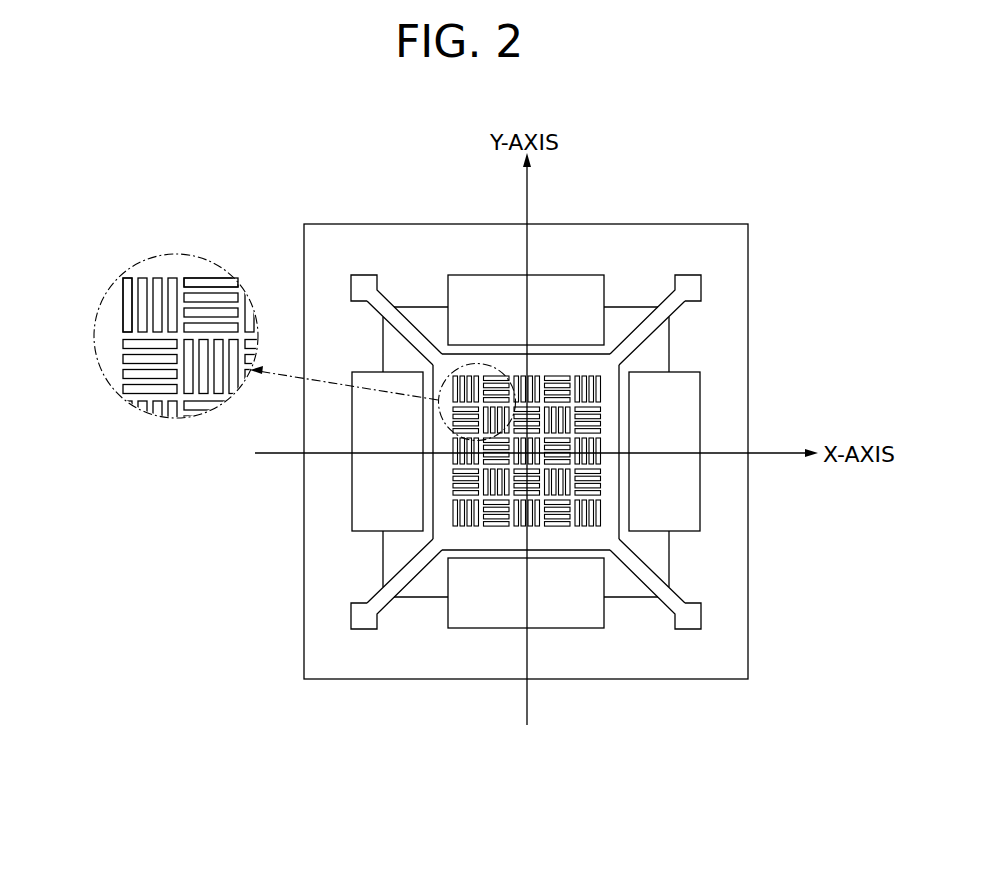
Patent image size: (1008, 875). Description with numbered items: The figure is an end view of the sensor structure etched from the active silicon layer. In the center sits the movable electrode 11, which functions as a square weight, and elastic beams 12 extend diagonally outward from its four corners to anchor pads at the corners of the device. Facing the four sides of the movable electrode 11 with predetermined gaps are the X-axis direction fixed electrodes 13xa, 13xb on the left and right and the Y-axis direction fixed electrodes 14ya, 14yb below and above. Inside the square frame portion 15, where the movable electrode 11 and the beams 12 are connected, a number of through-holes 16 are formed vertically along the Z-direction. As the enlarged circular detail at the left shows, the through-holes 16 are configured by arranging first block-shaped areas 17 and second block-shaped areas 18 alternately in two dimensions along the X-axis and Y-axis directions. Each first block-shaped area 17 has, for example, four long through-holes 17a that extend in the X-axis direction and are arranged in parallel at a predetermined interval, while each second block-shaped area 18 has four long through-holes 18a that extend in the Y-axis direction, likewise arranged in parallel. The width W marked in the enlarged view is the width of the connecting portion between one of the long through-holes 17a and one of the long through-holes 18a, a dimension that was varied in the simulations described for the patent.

The movable electrode 11 is at (478, 352).
The elastic beams 12 is at (412, 335).
The X-axis direction fixed electrode 13xa is at (384, 498).
The X-axis direction fixed electrode 13xb is at (673, 490).
The Y-axis direction fixed electrode 14ya is at (567, 602).
The Y-axis direction fixed electrode 14yb is at (575, 300).
The square frame portion 15 is at (468, 535).
The through-holes 16 is at (498, 535).
The first block-shaped areas 17 is at (198, 270).
The long through-holes 17a is at (223, 297).
The second block-shaped areas 18 is at (125, 270).
The long through-holes 18a is at (143, 308).
The width of connecting portion W is at (168, 272).